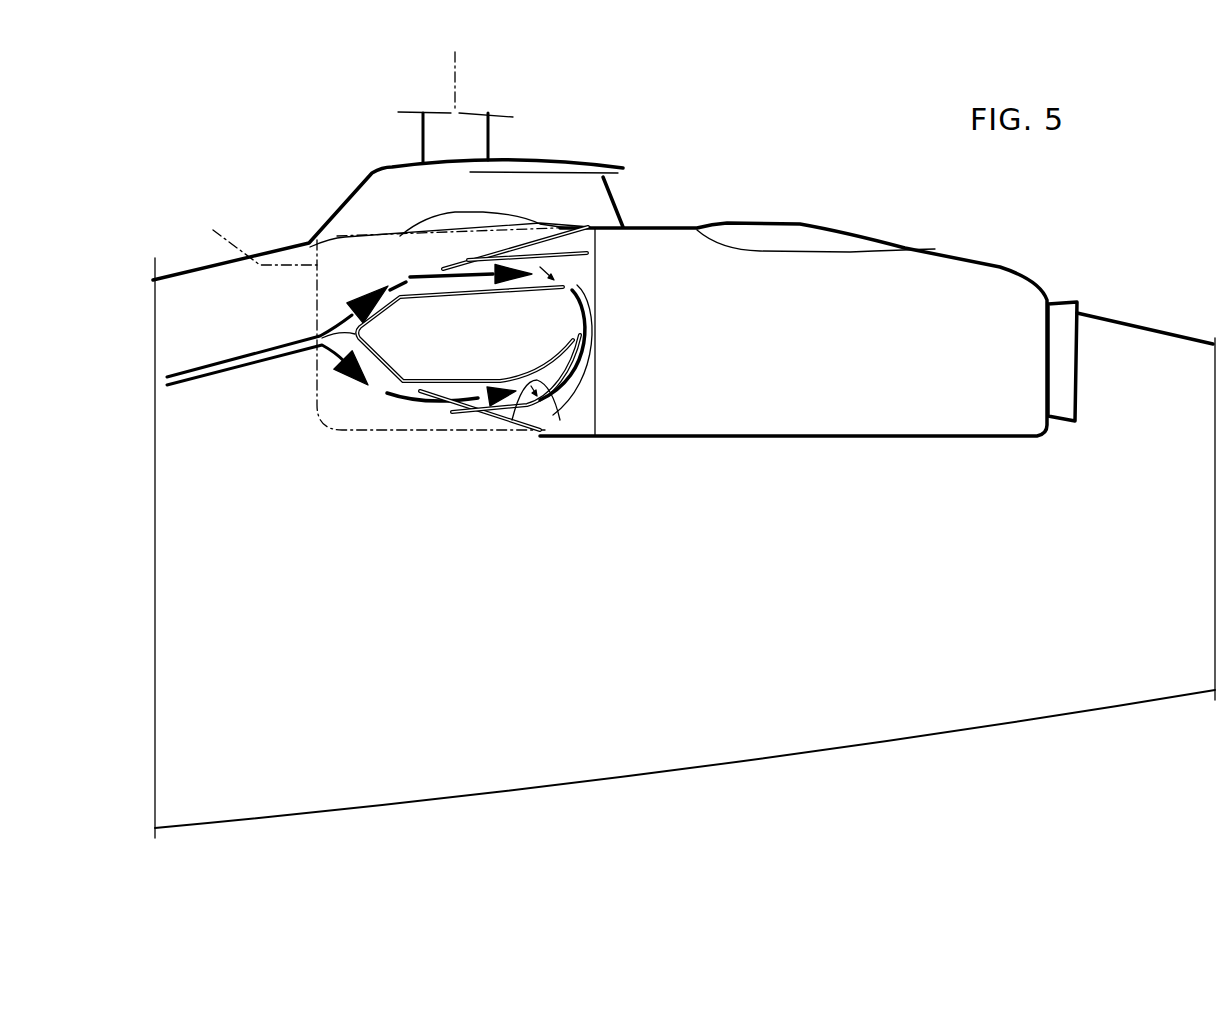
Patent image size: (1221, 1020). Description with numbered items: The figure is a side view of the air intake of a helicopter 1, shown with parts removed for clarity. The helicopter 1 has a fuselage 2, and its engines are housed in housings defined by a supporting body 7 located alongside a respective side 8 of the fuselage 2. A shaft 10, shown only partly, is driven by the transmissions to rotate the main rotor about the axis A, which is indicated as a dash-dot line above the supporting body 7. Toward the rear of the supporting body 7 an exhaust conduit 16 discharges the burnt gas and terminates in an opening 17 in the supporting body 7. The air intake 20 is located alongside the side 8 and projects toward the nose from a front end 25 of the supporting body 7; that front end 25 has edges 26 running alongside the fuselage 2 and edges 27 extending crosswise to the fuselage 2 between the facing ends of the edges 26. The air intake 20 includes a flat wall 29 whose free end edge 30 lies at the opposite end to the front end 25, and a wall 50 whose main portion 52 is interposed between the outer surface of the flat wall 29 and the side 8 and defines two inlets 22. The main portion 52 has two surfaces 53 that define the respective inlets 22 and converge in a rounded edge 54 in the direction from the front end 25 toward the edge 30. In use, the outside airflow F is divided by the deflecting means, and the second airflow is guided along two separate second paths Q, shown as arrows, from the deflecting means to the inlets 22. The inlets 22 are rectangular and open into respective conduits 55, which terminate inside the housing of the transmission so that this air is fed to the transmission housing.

The helicopter 1 is at (853, 178).
The fuselage 2 is at (1080, 683).
The supporting body 7 is at (942, 278).
The side 8 is at (997, 633).
The shaft 10 is at (467, 127).
The exhaust conduit 16 is at (1063, 307).
The opening 17 is at (1090, 350).
The air intake 20 is at (316, 210).
The inlet 22 is at (411, 265).
The front end 25 is at (597, 398).
The edge 26 is at (597, 278).
The edge 27 is at (580, 437).
The flat wall 29 is at (283, 222).
The free end edge 30 is at (388, 313).
The wall 50 is at (437, 447).
The main portion 52 is at (527, 417).
The surface 53 is at (533, 245).
The rounded edge 54 is at (354, 334).
The conduit 55 is at (583, 240).
The axis A is at (455, 65).
The airflow F is at (222, 380).
The second path Q is at (441, 265).